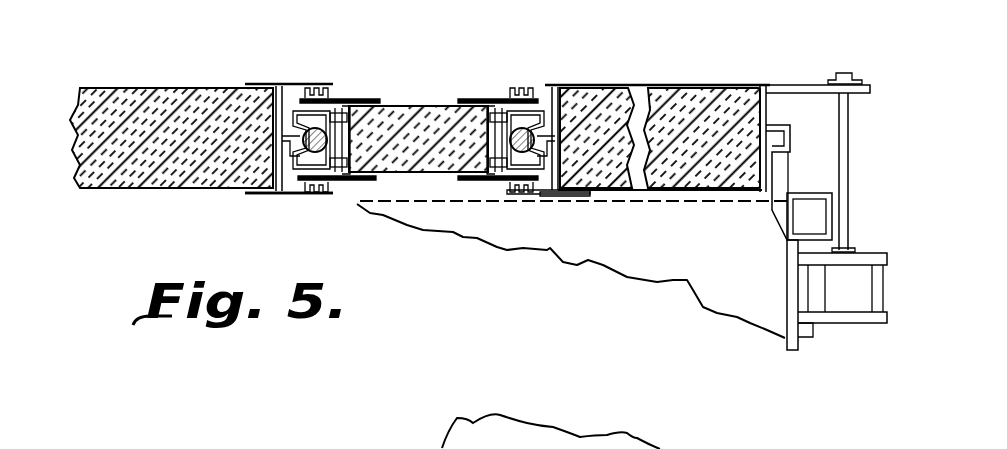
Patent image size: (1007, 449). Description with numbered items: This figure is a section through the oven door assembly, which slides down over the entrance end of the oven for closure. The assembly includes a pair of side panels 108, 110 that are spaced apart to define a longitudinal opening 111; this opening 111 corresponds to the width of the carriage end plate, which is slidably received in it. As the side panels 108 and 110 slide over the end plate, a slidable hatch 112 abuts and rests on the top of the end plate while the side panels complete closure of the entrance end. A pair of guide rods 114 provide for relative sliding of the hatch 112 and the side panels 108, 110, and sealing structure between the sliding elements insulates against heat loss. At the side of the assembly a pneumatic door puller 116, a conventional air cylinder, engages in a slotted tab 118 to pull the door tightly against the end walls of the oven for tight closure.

The side panel 108 is at (175, 88).
The side panel 110 is at (700, 88).
The longitudinal opening 111 is at (365, 192).
The slidable hatch 112 is at (440, 177).
The guide rods 114 is at (318, 128).
The pneumatic door puller 116 is at (850, 176).
The slotted tab 118 is at (792, 86).